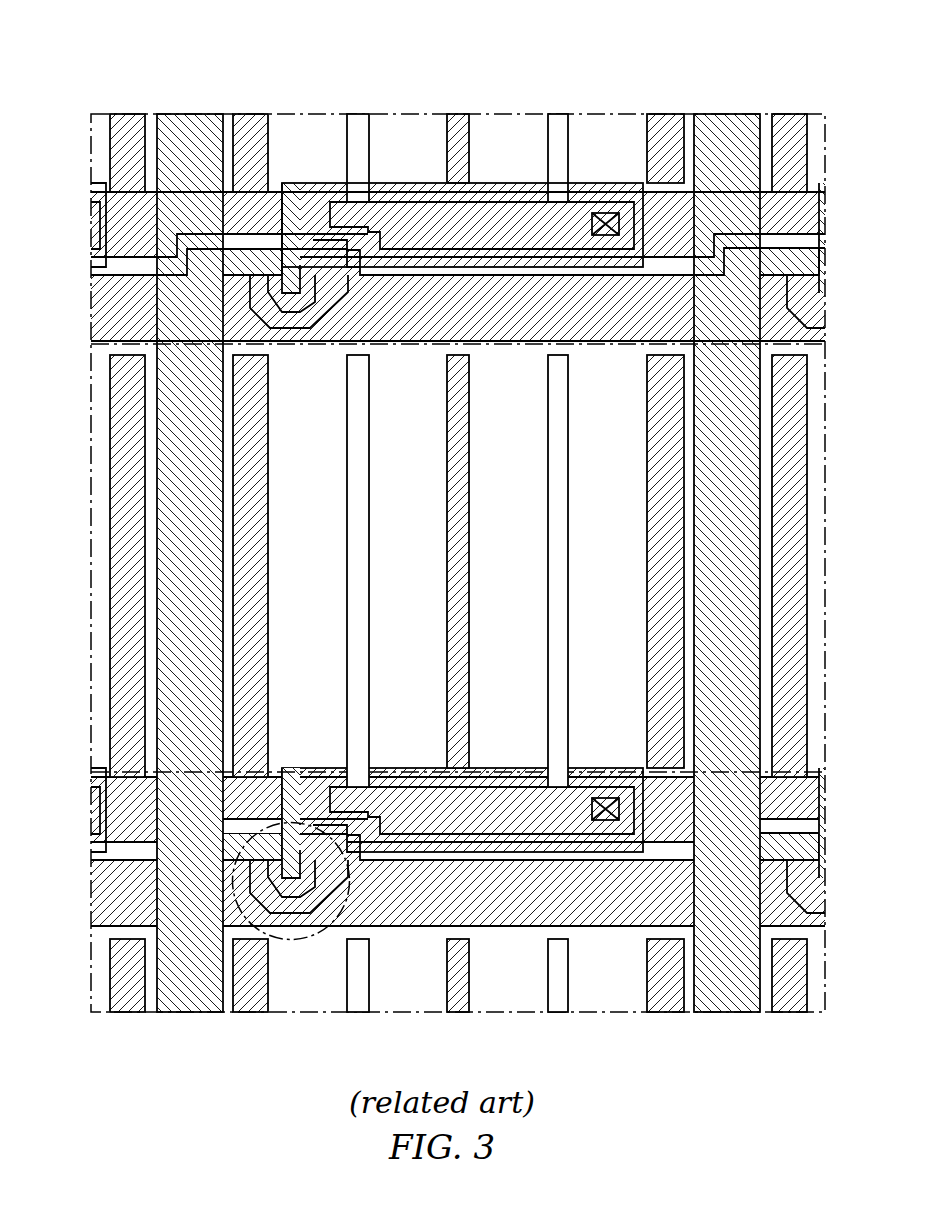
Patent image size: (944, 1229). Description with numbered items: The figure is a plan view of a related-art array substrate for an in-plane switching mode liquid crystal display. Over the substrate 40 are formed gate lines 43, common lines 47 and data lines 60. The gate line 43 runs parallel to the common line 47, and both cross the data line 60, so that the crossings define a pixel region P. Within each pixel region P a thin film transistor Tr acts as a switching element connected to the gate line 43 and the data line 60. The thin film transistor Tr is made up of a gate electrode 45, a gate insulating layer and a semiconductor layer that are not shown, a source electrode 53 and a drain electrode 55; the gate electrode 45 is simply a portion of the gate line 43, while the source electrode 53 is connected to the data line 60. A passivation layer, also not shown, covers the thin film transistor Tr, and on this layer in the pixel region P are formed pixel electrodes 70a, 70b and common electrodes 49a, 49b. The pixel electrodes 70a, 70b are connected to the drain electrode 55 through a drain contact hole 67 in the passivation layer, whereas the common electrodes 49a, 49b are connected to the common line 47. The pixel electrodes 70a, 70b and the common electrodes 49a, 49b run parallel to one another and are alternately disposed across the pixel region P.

The substrate 40 is at (546, 84).
The pixel region P is at (457, 536).
The data line 60 is at (177, 532).
The common electrode 49a is at (266, 413).
The common electrode 49b is at (464, 460).
The pixel electrode 70a is at (363, 412).
The pixel electrode 70b is at (553, 412).
The drain contact hole 67 is at (602, 798).
The common line 47 is at (665, 833).
The gate line 43 is at (512, 912).
The gate electrode 45 is at (291, 897).
The source electrode 53 is at (262, 905).
The drain electrode 55 is at (338, 905).
The thin film transistor Tr is at (311, 942).